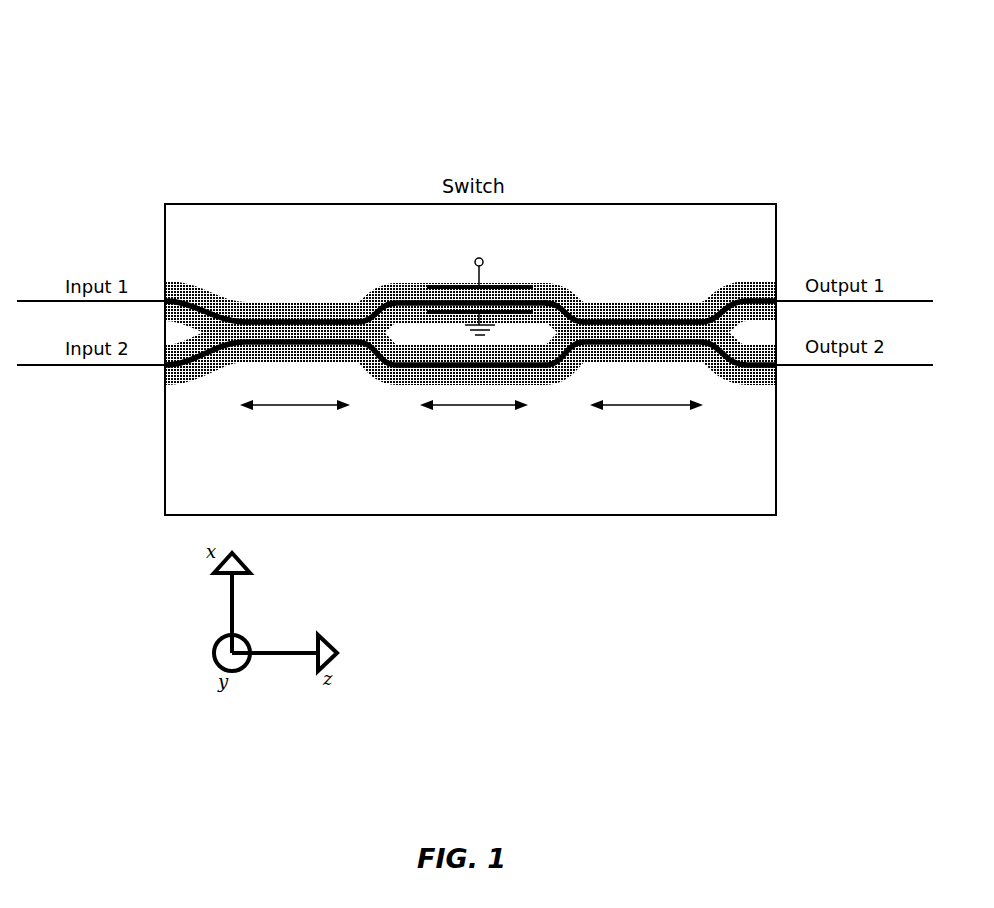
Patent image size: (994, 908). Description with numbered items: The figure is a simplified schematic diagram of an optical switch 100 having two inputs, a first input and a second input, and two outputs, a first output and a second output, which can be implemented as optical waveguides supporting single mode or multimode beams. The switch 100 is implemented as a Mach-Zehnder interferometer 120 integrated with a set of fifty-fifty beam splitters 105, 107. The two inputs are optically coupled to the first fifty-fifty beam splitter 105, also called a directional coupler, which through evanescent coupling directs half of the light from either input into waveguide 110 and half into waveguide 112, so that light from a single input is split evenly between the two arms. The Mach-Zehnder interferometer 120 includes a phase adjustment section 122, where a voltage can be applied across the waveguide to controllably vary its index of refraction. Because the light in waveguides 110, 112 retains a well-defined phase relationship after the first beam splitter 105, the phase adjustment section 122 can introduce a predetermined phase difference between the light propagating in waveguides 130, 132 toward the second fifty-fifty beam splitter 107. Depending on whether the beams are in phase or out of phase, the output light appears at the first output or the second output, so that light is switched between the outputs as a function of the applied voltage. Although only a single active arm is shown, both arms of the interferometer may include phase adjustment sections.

The switch 100 is at (329, 95).
The first 50/50 beam splitter 105 is at (306, 275).
The second 50/50 beam splitter 107 is at (660, 353).
The waveguide 110 is at (390, 301).
The waveguide 112 is at (390, 364).
The Mach-Zehnder interferometer 120 is at (482, 363).
The phase adjustment section 122 is at (511, 255).
The waveguide 130 is at (560, 307).
The waveguide 132 is at (553, 353).